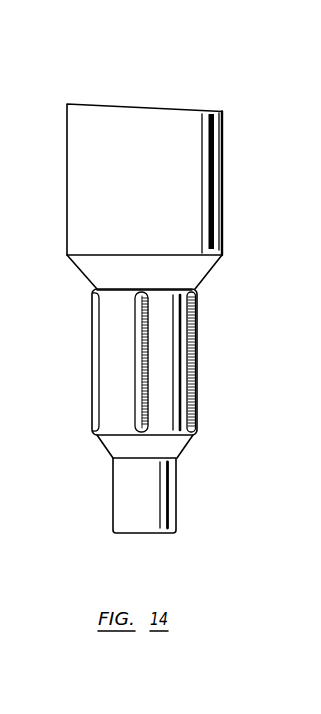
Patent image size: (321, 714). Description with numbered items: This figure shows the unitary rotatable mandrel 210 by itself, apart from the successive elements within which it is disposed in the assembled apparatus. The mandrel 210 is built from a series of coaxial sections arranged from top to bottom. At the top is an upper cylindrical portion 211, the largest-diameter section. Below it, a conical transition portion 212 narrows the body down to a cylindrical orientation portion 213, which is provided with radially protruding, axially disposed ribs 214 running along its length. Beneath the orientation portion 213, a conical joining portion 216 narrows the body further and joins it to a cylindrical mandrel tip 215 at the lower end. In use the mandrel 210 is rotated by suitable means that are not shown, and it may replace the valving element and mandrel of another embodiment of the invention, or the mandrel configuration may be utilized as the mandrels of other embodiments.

The mandrel 210 is at (168, 104).
The upper cylindrical portion 211 is at (214, 184).
The conical transition portion 212 is at (190, 271).
The cylindrical orientation portion 213 is at (113, 356).
The ribs 214 is at (137, 392).
The cylindrical mandrel tip 215 is at (178, 512).
The conical joining portion 216 is at (175, 443).